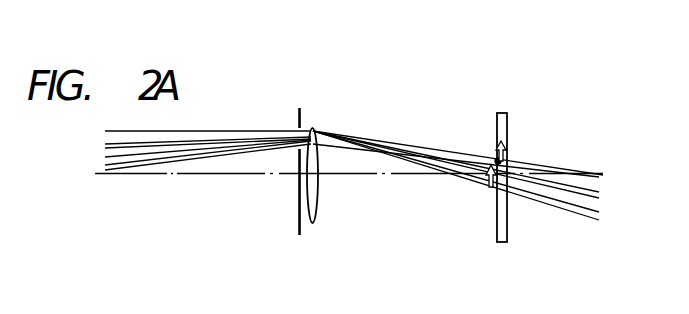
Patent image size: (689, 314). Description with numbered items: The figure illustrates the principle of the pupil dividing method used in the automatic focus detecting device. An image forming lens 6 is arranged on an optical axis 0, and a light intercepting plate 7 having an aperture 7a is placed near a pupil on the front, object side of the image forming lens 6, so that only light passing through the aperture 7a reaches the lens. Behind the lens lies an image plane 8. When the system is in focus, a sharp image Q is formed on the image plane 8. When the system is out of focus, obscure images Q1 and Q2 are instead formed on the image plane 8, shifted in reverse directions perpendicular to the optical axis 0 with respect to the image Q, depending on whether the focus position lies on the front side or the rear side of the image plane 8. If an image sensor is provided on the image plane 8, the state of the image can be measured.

The optical axis 0 is at (191, 176).
The image forming lens 6 is at (314, 206).
The light intercepting plate 7 is at (298, 222).
The aperture 7a is at (299, 136).
The image plane 8 is at (502, 242).
The image Q is at (496, 157).
The obscure image Q1 is at (489, 178).
The obscure image Q2 is at (506, 142).